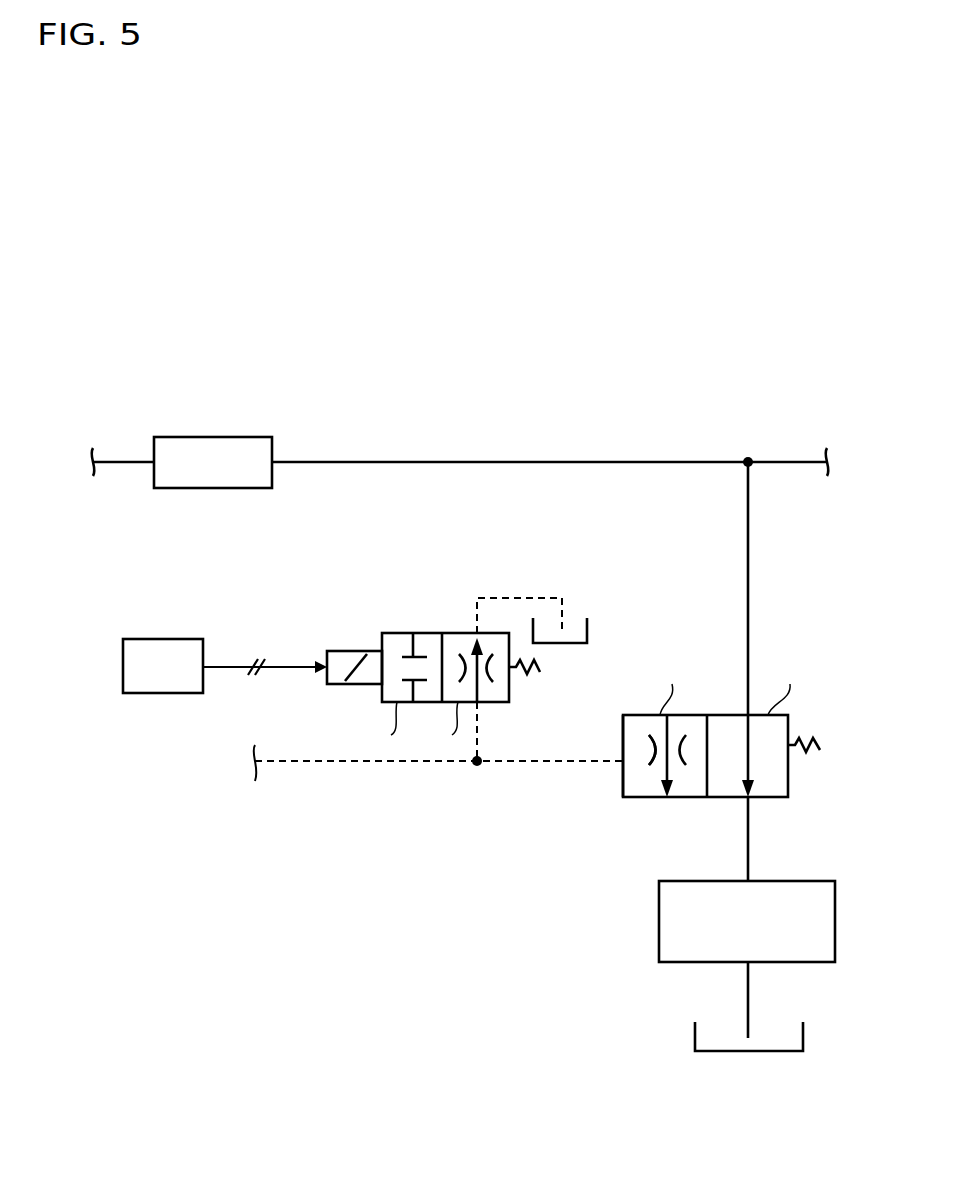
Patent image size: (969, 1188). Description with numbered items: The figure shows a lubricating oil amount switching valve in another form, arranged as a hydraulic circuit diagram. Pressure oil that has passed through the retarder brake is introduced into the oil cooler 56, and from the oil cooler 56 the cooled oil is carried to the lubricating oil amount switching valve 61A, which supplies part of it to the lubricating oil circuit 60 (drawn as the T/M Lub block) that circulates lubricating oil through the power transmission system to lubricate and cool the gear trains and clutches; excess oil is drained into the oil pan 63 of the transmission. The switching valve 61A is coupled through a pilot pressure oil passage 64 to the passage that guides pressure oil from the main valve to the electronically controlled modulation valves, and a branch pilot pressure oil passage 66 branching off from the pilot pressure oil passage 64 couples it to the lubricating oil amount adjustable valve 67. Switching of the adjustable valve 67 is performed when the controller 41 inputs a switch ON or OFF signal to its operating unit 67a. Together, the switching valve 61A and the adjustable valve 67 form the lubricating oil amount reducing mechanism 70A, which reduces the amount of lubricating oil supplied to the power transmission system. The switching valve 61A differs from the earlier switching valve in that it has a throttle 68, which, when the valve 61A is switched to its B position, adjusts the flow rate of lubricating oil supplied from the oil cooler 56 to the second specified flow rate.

The oil cooler 56 is at (210, 437).
The controller 41 is at (161, 639).
The operating unit 67a is at (341, 651).
The lubricating oil amount adjustable valve 67 is at (396, 633).
The oil pan 63 is at (587, 630).
The branch pilot pressure oil passage 66 is at (480, 734).
The pilot pressure oil passage 64 is at (303, 761).
The lubricating oil amount reducing mechanism 70A is at (636, 631).
The throttle 68 is at (652, 740).
The lubricating oil amount switching valve 61A is at (623, 797).
The lubricating oil circuit 60 is at (659, 920).